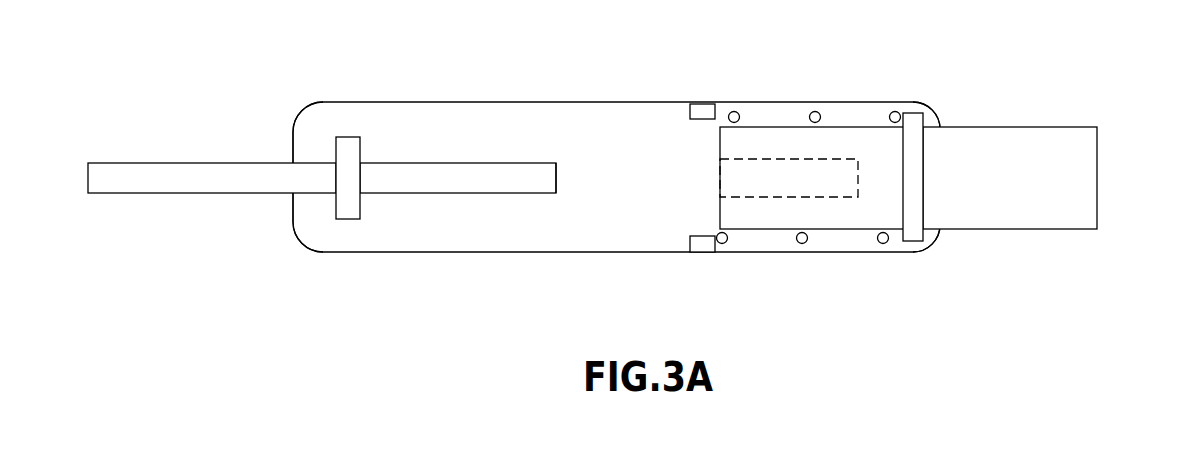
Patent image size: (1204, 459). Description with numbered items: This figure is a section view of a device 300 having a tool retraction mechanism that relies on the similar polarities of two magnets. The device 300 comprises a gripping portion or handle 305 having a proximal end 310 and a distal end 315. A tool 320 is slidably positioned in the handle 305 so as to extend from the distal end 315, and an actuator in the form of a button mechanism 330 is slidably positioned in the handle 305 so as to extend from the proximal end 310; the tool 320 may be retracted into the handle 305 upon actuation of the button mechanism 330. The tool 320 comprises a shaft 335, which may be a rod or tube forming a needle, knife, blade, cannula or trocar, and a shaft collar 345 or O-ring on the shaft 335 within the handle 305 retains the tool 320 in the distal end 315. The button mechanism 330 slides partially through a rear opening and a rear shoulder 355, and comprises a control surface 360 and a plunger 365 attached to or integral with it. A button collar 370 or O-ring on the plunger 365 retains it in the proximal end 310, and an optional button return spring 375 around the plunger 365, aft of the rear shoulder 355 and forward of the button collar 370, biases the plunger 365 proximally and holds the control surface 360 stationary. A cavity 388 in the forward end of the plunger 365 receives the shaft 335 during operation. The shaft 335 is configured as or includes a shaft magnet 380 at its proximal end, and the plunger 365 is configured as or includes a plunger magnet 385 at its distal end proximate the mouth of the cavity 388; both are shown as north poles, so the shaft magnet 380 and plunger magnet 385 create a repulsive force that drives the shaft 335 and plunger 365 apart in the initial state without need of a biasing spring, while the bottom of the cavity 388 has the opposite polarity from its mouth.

The device 300 is at (616, 179).
The handle 305 is at (600, 102).
The proximal end 310 is at (932, 102).
The distal end 315 is at (300, 110).
The tool 320 is at (172, 195).
The button mechanism 330 is at (891, 199).
The shaft 335 is at (435, 162).
The shaft collar 345 is at (348, 220).
The rear shoulder 355 is at (707, 104).
The control surface 360 is at (1097, 177).
The plunger 365 is at (880, 200).
The button collar 370 is at (959, 201).
The button return spring 375 is at (802, 244).
The shaft magnet 380 is at (557, 178).
The plunger magnet 385 is at (727, 205).
The cavity 388 is at (770, 165).